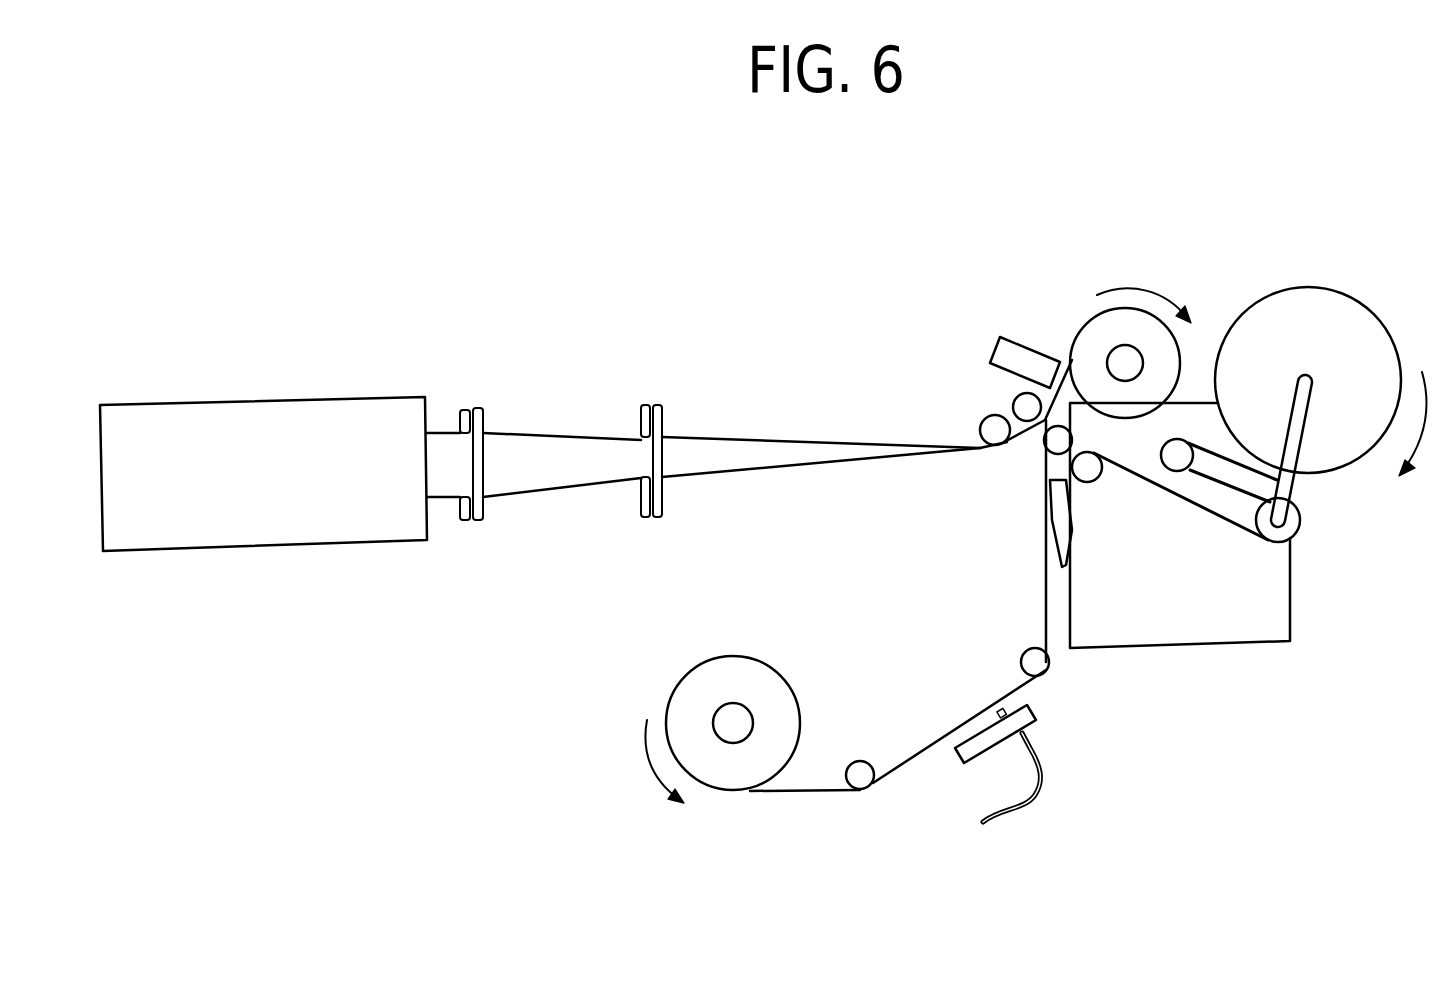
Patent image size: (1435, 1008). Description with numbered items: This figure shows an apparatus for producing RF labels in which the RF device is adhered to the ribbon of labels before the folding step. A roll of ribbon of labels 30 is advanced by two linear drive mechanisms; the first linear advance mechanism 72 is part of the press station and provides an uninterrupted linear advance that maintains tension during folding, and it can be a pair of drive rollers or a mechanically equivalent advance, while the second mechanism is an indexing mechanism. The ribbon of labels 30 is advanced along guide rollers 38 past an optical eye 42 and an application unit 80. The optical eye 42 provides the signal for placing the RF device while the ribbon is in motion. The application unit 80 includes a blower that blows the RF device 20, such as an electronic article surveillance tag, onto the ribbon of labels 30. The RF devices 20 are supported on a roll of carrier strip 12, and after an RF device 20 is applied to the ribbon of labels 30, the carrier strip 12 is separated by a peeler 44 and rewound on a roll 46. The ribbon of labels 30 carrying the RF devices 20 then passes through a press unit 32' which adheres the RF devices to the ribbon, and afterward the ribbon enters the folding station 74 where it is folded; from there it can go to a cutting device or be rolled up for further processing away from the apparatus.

The roll of carrier strip 12 is at (1322, 287).
The roll 46 is at (1150, 330).
The press unit 32' is at (1007, 333).
The folding station 74 is at (660, 408).
The first linear advance mechanism 72 is at (327, 545).
The peeler 44 is at (1047, 505).
The guide rollers 38 is at (1022, 652).
The RF device 20 is at (1048, 612).
The application unit 80 is at (1292, 596).
The ribbon of labels 30 is at (803, 795).
The optical eye 42 is at (1025, 738).